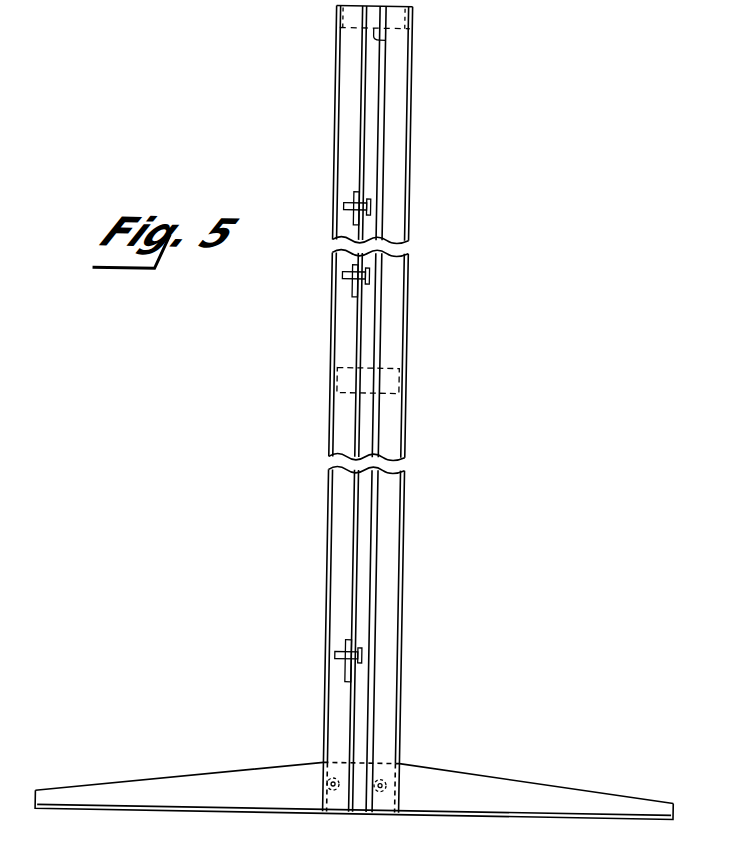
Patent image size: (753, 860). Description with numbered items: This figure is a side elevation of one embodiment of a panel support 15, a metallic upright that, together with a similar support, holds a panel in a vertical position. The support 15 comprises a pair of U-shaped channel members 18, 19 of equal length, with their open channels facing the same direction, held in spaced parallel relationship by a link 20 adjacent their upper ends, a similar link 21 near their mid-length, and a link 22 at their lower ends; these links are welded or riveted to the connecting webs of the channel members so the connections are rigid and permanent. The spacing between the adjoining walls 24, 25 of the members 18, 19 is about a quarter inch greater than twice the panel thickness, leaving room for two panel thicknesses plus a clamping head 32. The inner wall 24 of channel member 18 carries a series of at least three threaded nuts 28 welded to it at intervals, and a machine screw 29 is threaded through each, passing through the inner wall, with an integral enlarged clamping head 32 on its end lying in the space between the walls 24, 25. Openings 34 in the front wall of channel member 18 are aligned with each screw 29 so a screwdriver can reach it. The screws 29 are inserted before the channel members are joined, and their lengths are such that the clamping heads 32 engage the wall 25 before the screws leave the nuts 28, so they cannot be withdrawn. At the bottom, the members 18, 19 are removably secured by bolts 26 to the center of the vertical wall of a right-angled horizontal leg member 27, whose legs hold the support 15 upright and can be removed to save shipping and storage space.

The support 15 is at (315, 516).
The channel member 18 is at (337, 485).
The channel member 19 is at (380, 492).
The link 20 is at (372, 41).
The link 21 is at (376, 364).
The link 22 is at (391, 766).
The inner wall 24 is at (351, 312).
The wall 25 is at (373, 313).
The bolts 26 is at (326, 787).
The leg member 27 is at (470, 788).
The threaded nuts 28 is at (344, 191).
The machine screw 29 is at (334, 203).
The clamping head 32 is at (360, 207).
The openings 34 is at (323, 206).